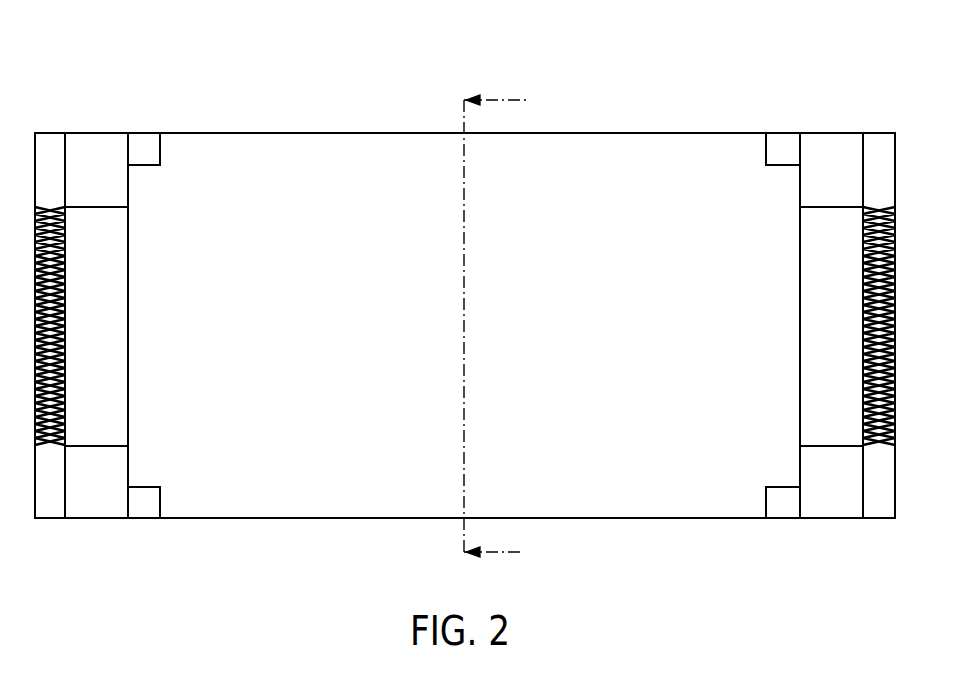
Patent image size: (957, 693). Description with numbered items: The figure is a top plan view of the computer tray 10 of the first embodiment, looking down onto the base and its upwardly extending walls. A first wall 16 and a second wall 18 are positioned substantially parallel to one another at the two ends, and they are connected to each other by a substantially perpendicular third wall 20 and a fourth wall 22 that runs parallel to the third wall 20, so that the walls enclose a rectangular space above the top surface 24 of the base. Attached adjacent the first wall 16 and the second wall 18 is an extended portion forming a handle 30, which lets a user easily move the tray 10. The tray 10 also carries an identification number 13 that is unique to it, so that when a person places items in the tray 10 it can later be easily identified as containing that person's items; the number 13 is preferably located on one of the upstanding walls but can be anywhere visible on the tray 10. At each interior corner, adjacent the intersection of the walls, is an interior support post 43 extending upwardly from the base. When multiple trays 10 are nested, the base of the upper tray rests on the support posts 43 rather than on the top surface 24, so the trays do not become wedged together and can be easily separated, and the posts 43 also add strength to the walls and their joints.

The tray 10 is at (711, 84).
The identification number 13 is at (97, 142).
The first wall 16 is at (128, 306).
The second wall 18 is at (798, 322).
The third wall 20 is at (517, 134).
The fourth wall 22 is at (575, 517).
The top surface 24 is at (590, 142).
The handle 30 is at (119, 380).
The interior support post 43 is at (150, 167).